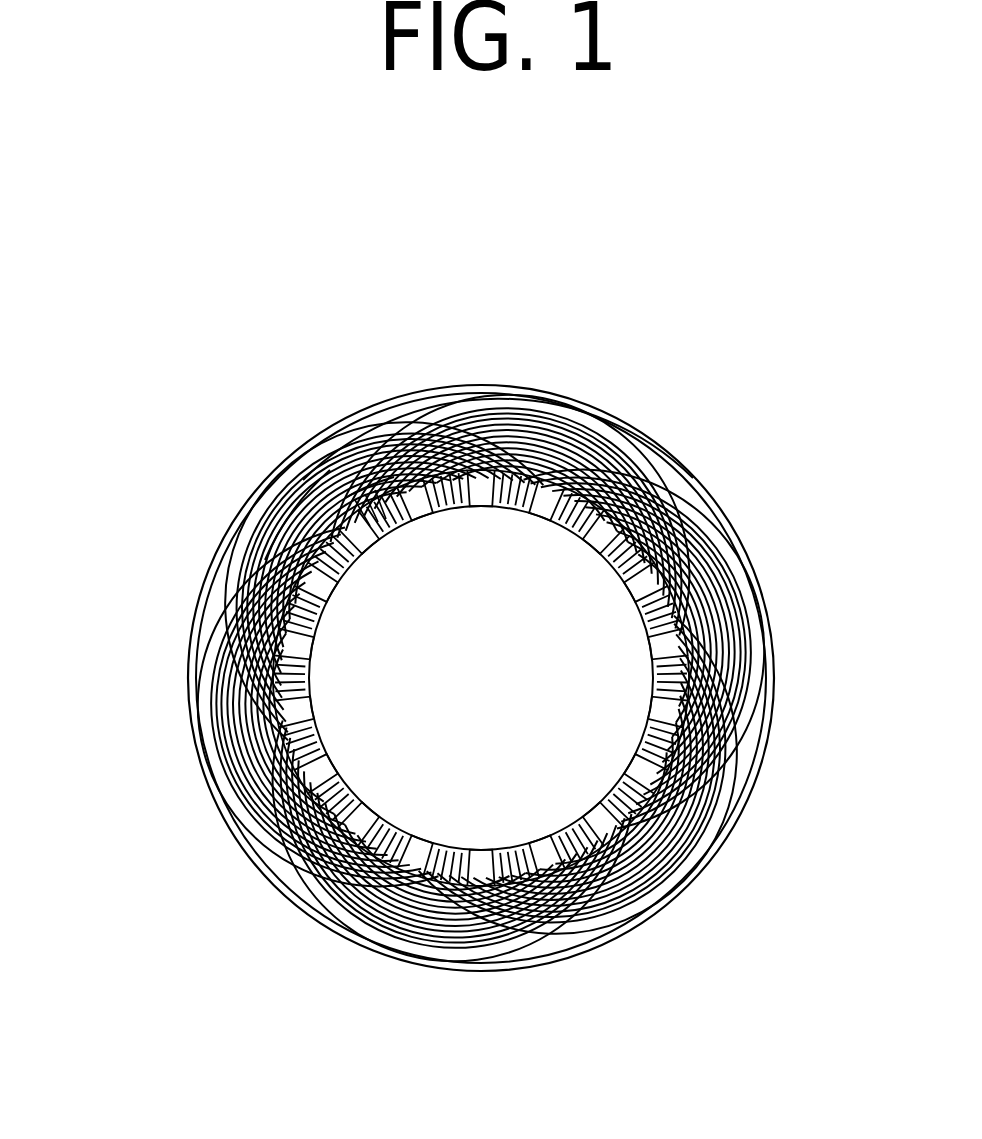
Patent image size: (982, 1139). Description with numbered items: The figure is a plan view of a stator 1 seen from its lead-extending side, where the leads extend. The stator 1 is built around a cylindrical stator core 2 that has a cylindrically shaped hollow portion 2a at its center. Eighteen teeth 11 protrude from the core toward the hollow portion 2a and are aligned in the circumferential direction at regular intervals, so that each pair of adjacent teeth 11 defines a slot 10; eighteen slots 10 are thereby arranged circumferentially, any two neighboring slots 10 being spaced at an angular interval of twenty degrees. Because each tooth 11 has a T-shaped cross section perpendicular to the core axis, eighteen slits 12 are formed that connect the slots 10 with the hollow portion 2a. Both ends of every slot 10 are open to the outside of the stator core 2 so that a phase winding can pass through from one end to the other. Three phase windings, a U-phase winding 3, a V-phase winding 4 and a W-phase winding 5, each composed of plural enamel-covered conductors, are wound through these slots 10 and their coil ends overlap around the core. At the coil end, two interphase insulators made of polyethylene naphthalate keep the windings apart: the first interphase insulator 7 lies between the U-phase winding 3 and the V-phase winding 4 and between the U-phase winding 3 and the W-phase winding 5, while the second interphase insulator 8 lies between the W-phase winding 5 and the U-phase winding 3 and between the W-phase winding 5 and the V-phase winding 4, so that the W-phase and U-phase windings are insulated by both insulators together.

The stator 1 is at (276, 288).
The stator core 2 is at (187, 705).
The hollow portion 2a is at (618, 695).
The U-phase winding 3 is at (367, 427).
The V-phase winding 4 is at (253, 557).
The W-phase winding 5 is at (487, 430).
The first interphase insulator 7 is at (523, 393).
The second interphase insulator 8 is at (297, 503).
The slot 10 is at (397, 527).
The tooth 11 is at (362, 537).
The slit 12 is at (395, 528).